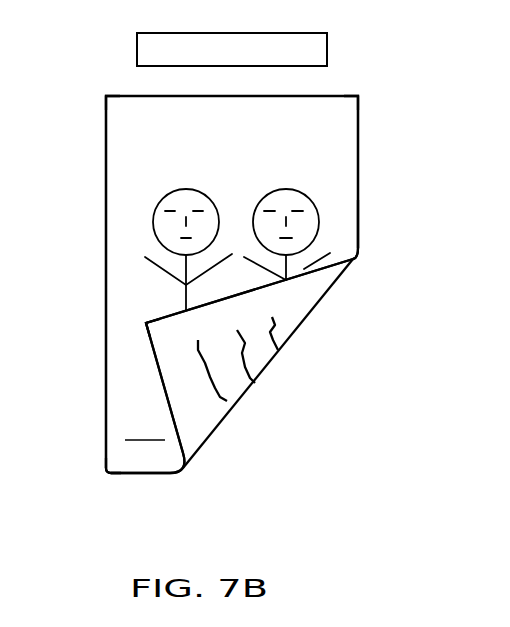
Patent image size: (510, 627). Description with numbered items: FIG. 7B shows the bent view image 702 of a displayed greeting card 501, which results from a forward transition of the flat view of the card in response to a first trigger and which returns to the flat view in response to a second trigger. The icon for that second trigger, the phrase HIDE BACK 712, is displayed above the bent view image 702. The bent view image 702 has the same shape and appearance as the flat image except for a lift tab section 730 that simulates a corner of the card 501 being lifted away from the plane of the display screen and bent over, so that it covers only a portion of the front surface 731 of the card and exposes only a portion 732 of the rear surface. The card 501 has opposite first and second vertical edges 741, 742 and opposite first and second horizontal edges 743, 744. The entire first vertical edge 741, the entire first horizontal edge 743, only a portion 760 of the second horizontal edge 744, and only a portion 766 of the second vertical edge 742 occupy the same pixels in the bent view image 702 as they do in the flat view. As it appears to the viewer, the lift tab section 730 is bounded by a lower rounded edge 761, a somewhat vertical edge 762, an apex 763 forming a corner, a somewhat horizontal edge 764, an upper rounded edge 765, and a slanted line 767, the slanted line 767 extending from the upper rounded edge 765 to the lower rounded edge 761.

The HIDE BACK icon 712 is at (137, 34).
The card 501 is at (105, 160).
The bent view image 702 is at (105, 203).
The first vertical edge 741 is at (105, 128).
The first horizontal edge 743 is at (305, 97).
The second vertical edge 742 is at (361, 183).
The portion of the second vertical edge 766 is at (360, 222).
The upper rounded edge 765 is at (356, 259).
The somewhat horizontal edge 764 is at (232, 297).
The apex 763 is at (147, 323).
The lift tab section 730 is at (150, 345).
The slanted line 767 is at (263, 368).
The lower rounded edge 761 is at (184, 469).
The portion of the second horizontal edge 760 is at (145, 475).
The second horizontal edge 744 is at (110, 474).
The portion of the rear surface 732 is at (197, 417).
The somewhat vertical edge 762 is at (169, 396).
The front surface 731 is at (145, 429).